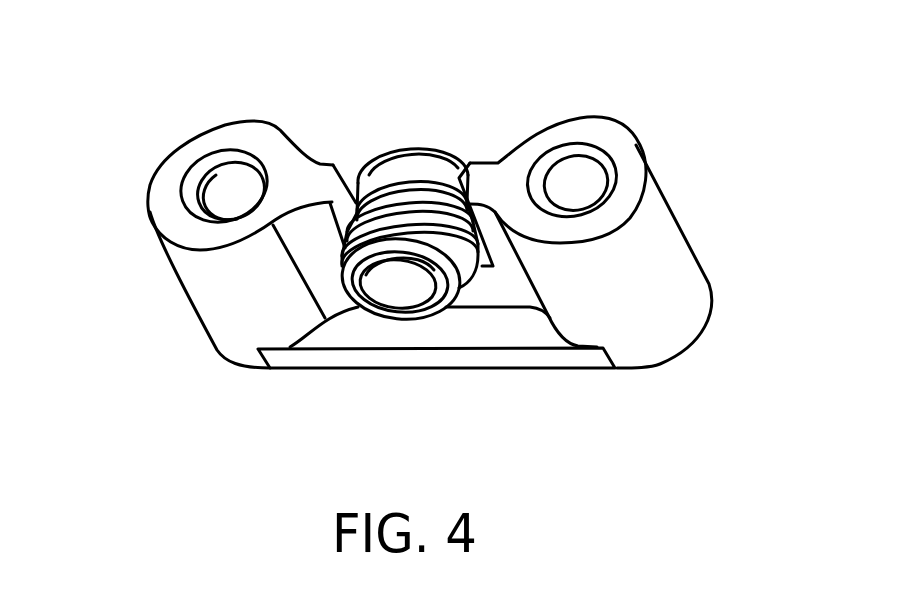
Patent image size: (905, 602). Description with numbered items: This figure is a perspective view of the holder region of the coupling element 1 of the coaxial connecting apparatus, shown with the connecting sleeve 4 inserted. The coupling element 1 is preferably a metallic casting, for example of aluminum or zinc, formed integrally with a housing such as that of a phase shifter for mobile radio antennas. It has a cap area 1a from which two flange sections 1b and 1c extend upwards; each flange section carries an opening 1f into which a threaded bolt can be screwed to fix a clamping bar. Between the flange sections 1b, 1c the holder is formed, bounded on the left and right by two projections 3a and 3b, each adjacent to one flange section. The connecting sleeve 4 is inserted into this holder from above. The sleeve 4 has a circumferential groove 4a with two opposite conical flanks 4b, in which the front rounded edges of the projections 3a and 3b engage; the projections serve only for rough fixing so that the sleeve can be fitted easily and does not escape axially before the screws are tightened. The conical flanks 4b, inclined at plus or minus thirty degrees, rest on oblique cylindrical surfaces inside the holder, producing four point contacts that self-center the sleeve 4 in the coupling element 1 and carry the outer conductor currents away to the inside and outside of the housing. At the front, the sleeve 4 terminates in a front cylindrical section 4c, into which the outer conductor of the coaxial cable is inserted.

The coupling element 1 is at (138, 131).
The cap area 1a is at (495, 357).
The flange section 1b is at (200, 277).
The flange section 1c is at (677, 247).
The opening 1f is at (232, 187).
The projection 3a is at (319, 176).
The projection 3b is at (505, 170).
The connecting sleeve 4 is at (406, 130).
The groove 4a is at (427, 187).
The conical flanks 4b is at (358, 188).
The front cylindrical section 4c is at (411, 312).